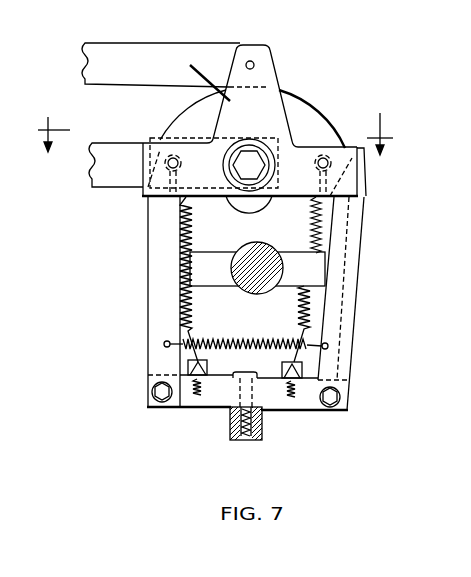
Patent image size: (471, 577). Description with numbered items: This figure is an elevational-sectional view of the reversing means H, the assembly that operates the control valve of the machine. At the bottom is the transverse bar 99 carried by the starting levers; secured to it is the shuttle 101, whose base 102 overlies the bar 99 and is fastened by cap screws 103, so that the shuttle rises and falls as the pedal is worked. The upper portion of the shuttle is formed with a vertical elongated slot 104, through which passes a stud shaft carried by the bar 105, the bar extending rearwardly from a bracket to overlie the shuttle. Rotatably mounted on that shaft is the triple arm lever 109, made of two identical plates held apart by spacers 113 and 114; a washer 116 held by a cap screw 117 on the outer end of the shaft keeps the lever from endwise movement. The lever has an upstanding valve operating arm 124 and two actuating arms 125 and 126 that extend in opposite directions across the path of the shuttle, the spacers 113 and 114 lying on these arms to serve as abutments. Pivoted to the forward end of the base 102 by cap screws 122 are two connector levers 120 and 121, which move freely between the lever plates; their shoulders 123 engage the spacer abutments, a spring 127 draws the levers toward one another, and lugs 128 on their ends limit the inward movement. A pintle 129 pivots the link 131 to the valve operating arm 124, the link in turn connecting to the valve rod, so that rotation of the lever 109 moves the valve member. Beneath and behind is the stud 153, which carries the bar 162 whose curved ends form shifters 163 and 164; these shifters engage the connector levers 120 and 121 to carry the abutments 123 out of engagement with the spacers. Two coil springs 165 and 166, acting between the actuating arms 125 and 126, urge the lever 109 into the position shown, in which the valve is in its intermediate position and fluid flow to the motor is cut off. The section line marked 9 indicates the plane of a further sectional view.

The link 131 is at (124, 58).
The valve operating arm 124 is at (242, 75).
The pintle 129 is at (253, 62).
The reversing means H is at (202, 76).
The shuttle 101 is at (292, 110).
The triple arm lever 109 is at (272, 110).
The actuating arm 125 is at (143, 163).
The lugs 128 is at (358, 147).
The bar 105 is at (113, 178).
The spacer 113 is at (168, 150).
The spacer 114 is at (322, 147).
The washer 116 is at (247, 142).
The cap screw 117 is at (247, 162).
The vertical elongated slot 104 is at (246, 209).
The shoulders 123 is at (143, 194).
The actuating arm 126 is at (315, 180).
The connector lever 120 is at (163, 298).
The connector lever 121 is at (340, 320).
The base 102 is at (217, 396).
The cap screws 122 is at (157, 400).
The cap screws 103 is at (248, 378).
The transverse bar 99 is at (229, 442).
The bar 162 is at (223, 262).
The stud 153 is at (256, 281).
The shifter 163 is at (185, 266).
The coil spring 166 is at (318, 224).
The shifter 164 is at (308, 272).
The spring 127 is at (241, 341).
The coil spring 165 is at (181, 305).
The section line 9- 9 is at (215, 146).